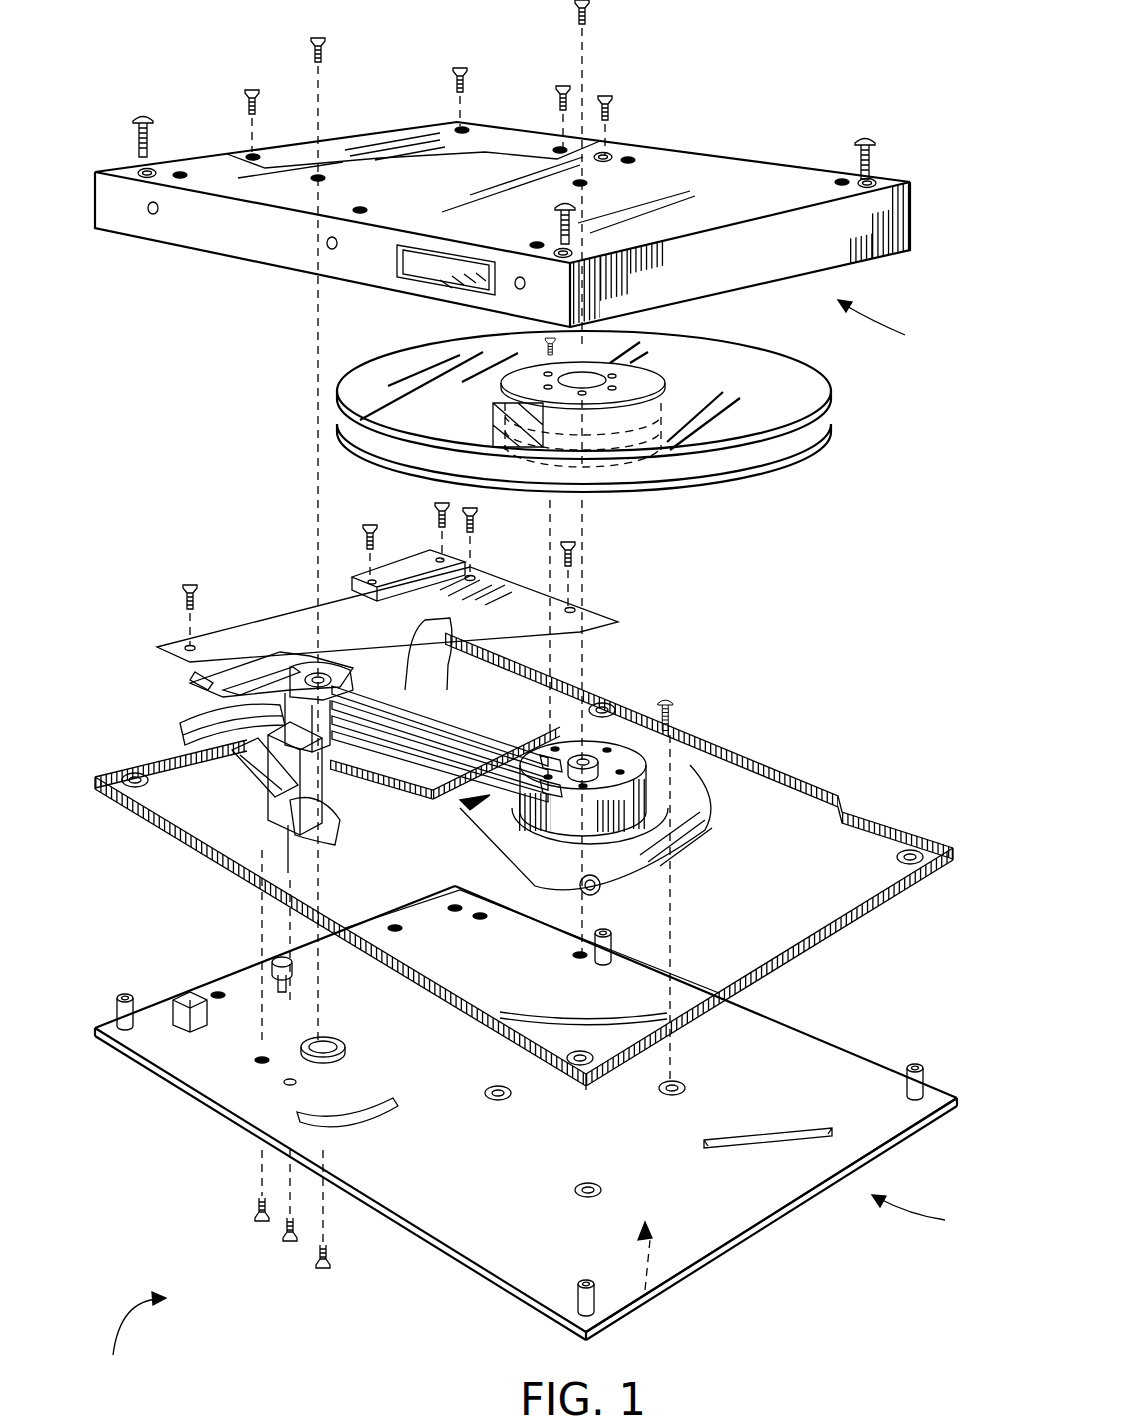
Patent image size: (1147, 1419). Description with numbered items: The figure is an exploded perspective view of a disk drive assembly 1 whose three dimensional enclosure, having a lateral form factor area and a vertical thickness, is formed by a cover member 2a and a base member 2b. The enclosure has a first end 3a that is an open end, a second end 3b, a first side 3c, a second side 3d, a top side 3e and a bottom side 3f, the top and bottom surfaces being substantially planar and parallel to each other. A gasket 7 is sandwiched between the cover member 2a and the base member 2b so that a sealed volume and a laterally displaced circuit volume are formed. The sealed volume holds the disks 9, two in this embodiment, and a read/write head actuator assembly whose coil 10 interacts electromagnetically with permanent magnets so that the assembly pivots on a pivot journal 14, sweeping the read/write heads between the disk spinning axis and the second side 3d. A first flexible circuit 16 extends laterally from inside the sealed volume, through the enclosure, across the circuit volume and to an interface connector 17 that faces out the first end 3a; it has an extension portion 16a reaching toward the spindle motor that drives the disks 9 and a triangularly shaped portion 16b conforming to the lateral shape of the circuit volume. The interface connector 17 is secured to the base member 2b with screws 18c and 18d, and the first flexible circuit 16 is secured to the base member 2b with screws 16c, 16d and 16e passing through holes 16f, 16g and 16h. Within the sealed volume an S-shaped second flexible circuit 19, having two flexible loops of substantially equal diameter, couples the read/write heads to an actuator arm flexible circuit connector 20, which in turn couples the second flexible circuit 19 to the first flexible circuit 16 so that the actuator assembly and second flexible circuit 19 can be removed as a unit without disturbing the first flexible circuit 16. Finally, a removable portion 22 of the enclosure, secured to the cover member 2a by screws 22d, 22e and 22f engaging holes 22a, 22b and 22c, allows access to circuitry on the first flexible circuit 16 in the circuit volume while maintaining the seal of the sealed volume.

The disk drive assembly 1 is at (134, 1337).
The cover member 2a is at (887, 326).
The base member 2b is at (920, 1216).
The first end 3a is at (213, 983).
The second end 3b is at (762, 260).
The first side 3c is at (782, 1021).
The second side 3d is at (237, 233).
The top side 3e is at (660, 163).
The bottom side 3f is at (659, 1294).
The gasket 7 is at (880, 812).
The disks 9 is at (825, 400).
The coil 10 is at (190, 687).
The pivot journal 14 is at (315, 670).
The first flexible circuit 16 is at (414, 696).
The extension portion 16a is at (548, 700).
The triangularly shaped portion 16b is at (587, 610).
The screw 16c is at (192, 583).
The screw 16d is at (478, 522).
The screw 16e is at (572, 543).
The hole 16f is at (183, 645).
The hole 16g is at (472, 576).
The hole 16h is at (572, 606).
The interface connector 17 is at (397, 568).
The screw 18c is at (440, 505).
The screw 18d is at (366, 525).
The second flexible circuit 19 is at (326, 788).
The actuator arm flexible circuit connector 20 is at (220, 762).
The removable portion 22 is at (440, 123).
The hole 22a is at (242, 157).
The hole 22b is at (560, 148).
The hole 22c is at (455, 125).
The screw 22d is at (250, 90).
The screw 22e is at (567, 92).
The screw 22f is at (462, 70).